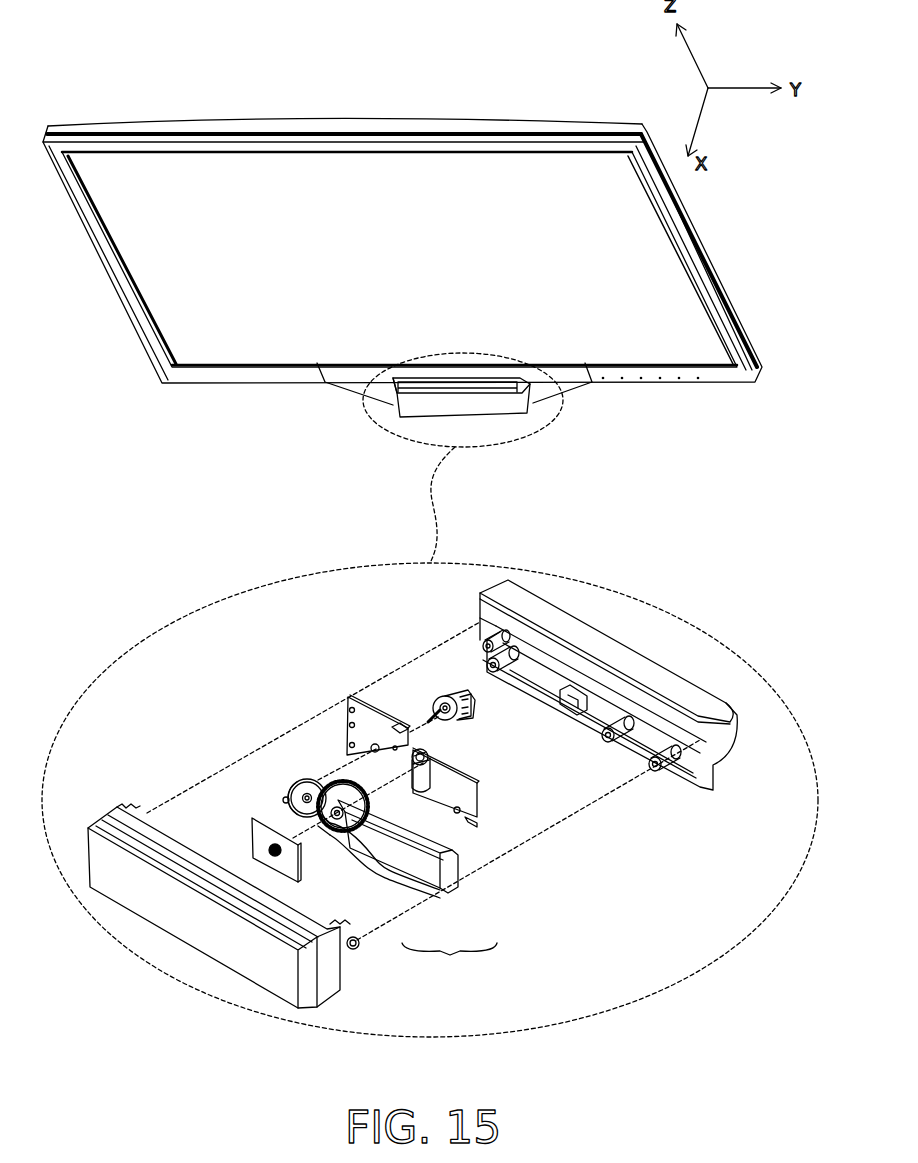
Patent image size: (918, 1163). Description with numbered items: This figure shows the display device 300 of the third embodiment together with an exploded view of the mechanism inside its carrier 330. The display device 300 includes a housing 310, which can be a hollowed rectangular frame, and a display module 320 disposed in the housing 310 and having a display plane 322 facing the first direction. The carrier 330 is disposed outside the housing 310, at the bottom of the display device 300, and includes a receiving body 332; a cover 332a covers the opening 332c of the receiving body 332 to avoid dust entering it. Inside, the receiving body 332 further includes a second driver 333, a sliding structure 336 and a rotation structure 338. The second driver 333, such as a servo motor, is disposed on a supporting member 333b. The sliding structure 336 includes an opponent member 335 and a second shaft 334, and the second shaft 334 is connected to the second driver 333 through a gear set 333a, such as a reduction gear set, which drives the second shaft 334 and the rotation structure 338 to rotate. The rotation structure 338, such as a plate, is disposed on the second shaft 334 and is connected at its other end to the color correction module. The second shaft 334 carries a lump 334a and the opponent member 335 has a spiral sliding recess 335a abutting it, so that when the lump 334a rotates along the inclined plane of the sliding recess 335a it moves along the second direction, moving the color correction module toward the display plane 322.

The display device 300 is at (83, 32).
The housing 310 is at (493, 120).
The display module 320 is at (365, 173).
The display plane 322 is at (425, 262).
The carrier 330 is at (160, 607).
The receiving body 332 is at (513, 410).
The cover 332a is at (475, 387).
The opening 332c is at (541, 391).
The second driver 333 is at (455, 694).
The gear set 333a is at (307, 778).
The supporting member 333b is at (372, 700).
The second shaft 334 is at (373, 857).
The lump 334a is at (388, 813).
The opponent member 335 is at (430, 745).
The sliding recess 335a is at (460, 770).
The sliding structure 336 is at (449, 964).
The rotation structure 338 is at (455, 852).